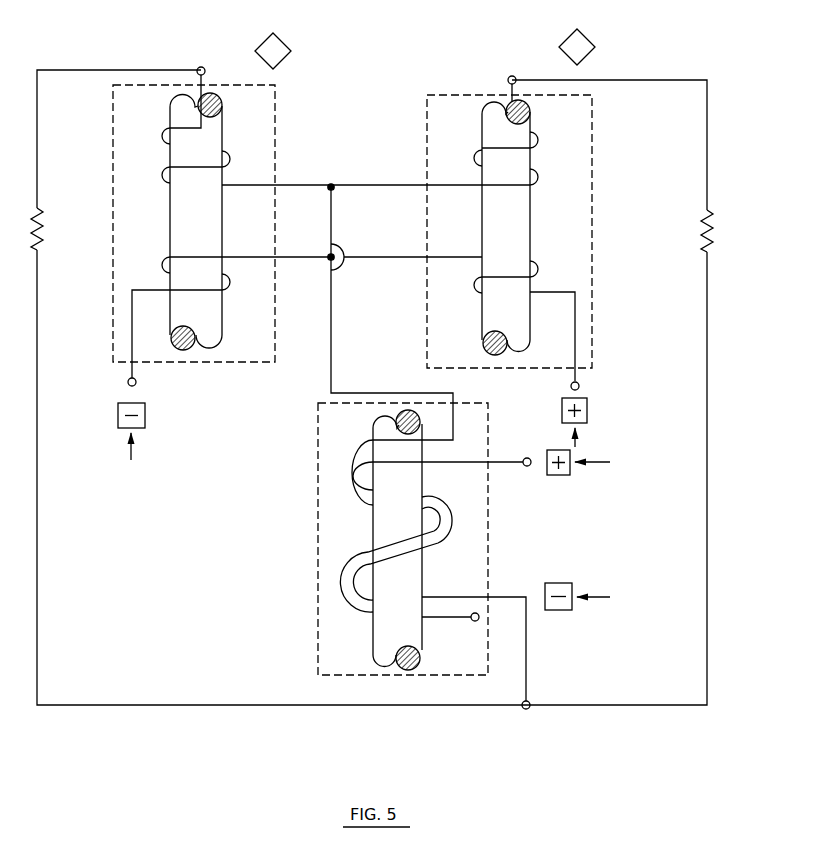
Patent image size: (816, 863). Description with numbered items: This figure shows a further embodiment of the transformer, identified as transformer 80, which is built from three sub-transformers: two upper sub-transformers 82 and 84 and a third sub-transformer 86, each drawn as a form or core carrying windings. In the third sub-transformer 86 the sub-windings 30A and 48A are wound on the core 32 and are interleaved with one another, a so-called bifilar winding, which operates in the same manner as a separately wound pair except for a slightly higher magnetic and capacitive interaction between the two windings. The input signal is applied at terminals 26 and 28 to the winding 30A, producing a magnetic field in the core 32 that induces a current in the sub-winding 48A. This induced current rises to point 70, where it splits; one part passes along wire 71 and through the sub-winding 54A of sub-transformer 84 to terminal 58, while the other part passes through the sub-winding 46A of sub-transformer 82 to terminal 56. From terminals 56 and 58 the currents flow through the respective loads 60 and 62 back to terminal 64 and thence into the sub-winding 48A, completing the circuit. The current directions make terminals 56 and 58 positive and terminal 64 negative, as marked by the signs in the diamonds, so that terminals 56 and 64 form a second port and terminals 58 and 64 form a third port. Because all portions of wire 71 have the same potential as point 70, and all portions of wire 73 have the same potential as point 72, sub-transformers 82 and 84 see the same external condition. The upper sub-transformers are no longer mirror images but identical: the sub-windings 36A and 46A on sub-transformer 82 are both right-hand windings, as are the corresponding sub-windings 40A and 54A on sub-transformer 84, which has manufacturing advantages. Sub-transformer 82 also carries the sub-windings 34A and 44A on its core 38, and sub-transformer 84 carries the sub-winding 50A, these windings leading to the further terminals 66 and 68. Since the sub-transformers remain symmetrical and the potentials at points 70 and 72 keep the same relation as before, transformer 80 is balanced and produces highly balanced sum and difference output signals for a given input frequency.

The positive input terminal 26 is at (527, 457).
The negative input terminal 28 is at (473, 621).
The sub-winding 30A is at (355, 549).
The core 32 is at (414, 575).
The winding 34A is at (146, 291).
The sub-winding 36A is at (163, 262).
The magnetic core 38 is at (170, 216).
The sub-winding 40A is at (537, 266).
The winding 44A is at (161, 137).
The sub-winding 46A is at (163, 172).
The sub-winding 48A is at (358, 455).
The winding 50A is at (544, 138).
The sub-winding 54A is at (480, 162).
The terminal 56 is at (201, 66).
The terminal 58 is at (514, 76).
The load 60 is at (40, 247).
The load 62 is at (713, 238).
The terminal 64 is at (529, 710).
The output terminal 66 is at (137, 385).
The output terminal 68 is at (580, 387).
The point 70 is at (333, 185).
The wire 71 is at (391, 186).
The point 72 is at (329, 255).
The wire 73 is at (386, 257).
The transformer 80 is at (352, 112).
The sub-transformer 82 is at (275, 150).
The sub-transformer 84 is at (441, 93).
The third sub-transformer 86 is at (318, 423).